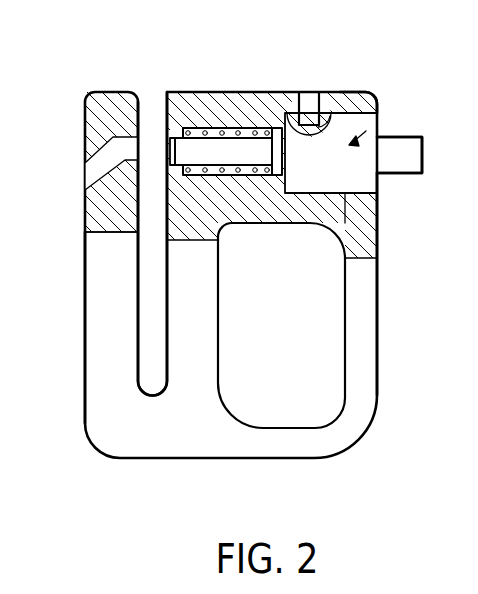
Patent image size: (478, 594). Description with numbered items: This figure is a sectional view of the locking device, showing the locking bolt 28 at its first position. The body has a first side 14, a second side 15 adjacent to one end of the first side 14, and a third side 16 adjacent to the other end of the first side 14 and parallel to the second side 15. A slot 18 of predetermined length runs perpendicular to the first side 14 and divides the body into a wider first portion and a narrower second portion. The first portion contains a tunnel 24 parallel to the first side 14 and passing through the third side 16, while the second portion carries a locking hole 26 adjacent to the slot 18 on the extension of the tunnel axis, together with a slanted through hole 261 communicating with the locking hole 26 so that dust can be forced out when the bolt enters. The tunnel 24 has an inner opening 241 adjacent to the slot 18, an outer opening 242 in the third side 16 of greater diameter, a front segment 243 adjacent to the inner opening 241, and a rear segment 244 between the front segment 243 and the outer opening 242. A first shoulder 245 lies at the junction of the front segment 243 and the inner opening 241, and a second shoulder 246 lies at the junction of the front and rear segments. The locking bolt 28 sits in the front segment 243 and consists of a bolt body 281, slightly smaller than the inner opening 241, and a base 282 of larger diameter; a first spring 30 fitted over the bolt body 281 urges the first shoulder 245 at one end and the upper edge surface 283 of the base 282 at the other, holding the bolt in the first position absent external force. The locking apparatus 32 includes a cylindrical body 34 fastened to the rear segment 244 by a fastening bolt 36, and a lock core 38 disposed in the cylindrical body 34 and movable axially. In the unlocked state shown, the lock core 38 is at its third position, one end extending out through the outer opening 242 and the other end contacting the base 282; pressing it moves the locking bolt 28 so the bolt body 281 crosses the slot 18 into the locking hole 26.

The first side 14 is at (205, 100).
The second side 15 is at (82, 357).
The third side 16 is at (380, 382).
The slot 18 is at (153, 116).
The tunnel 24 is at (245, 117).
The locking hole 26 is at (122, 90).
The locking bolt 28 is at (216, 150).
The first spring 30 is at (241, 185).
The locking apparatus 32 is at (379, 112).
The cylindrical body 34 is at (363, 162).
The fastening bolt 36 is at (310, 90).
The lock core 38 is at (413, 164).
The inner opening 241 is at (172, 118).
The outer opening 242 is at (380, 197).
The front segment 243 is at (214, 120).
The rear segment 244 is at (348, 92).
The first shoulder 245 is at (188, 153).
The second shoulder 246 is at (269, 177).
The slanted through hole 261 is at (100, 165).
The bolt body 281 is at (137, 232).
The base 282 is at (282, 165).
The upper edge surface 283 is at (272, 108).